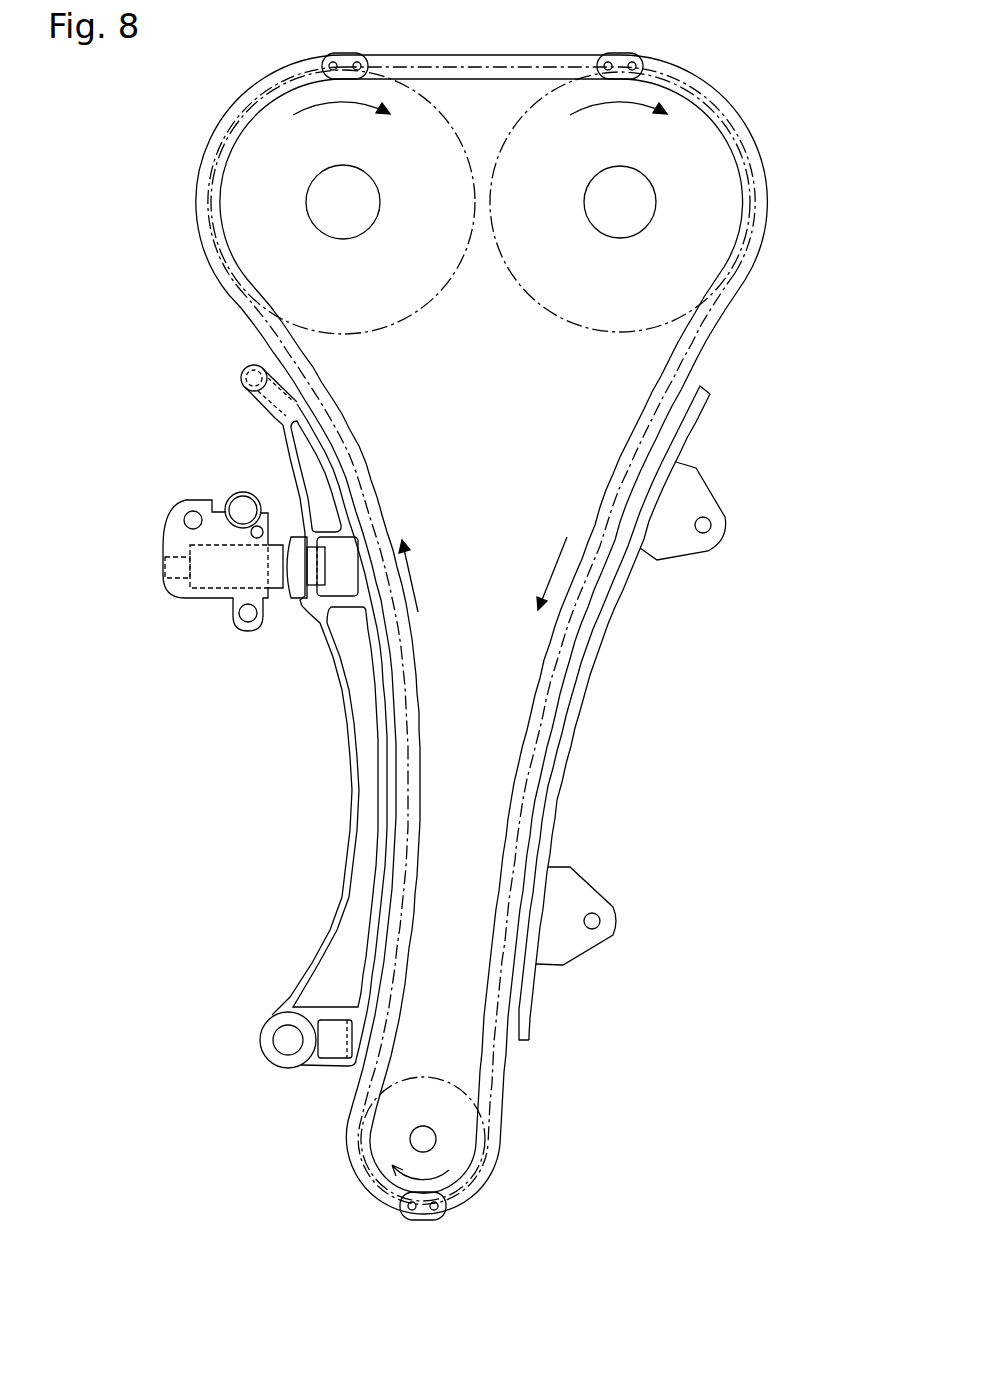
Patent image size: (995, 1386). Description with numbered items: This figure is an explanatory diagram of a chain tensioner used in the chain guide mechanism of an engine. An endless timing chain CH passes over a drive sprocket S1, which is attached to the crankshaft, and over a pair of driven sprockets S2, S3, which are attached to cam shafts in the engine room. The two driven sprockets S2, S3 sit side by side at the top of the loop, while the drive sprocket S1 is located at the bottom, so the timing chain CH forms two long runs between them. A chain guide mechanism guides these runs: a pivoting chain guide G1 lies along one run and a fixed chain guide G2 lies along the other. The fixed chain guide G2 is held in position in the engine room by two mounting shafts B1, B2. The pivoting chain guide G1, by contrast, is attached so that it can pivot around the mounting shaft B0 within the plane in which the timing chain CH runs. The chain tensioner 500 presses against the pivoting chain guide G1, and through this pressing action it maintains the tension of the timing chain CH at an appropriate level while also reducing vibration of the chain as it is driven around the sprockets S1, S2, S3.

The drive sprocket S1 is at (462, 1146).
The driven sprocket S2 is at (262, 191).
The driven sprocket S3 is at (697, 184).
The timing chain CH is at (697, 342).
The chain tensioner 500 is at (178, 545).
The pivoting chain guide G1 is at (357, 920).
The fixed chain guide G2 is at (556, 766).
The mounting shaft B0 is at (290, 1040).
The mounting shaft B1 is at (711, 525).
The mounting shaft B2 is at (600, 921).